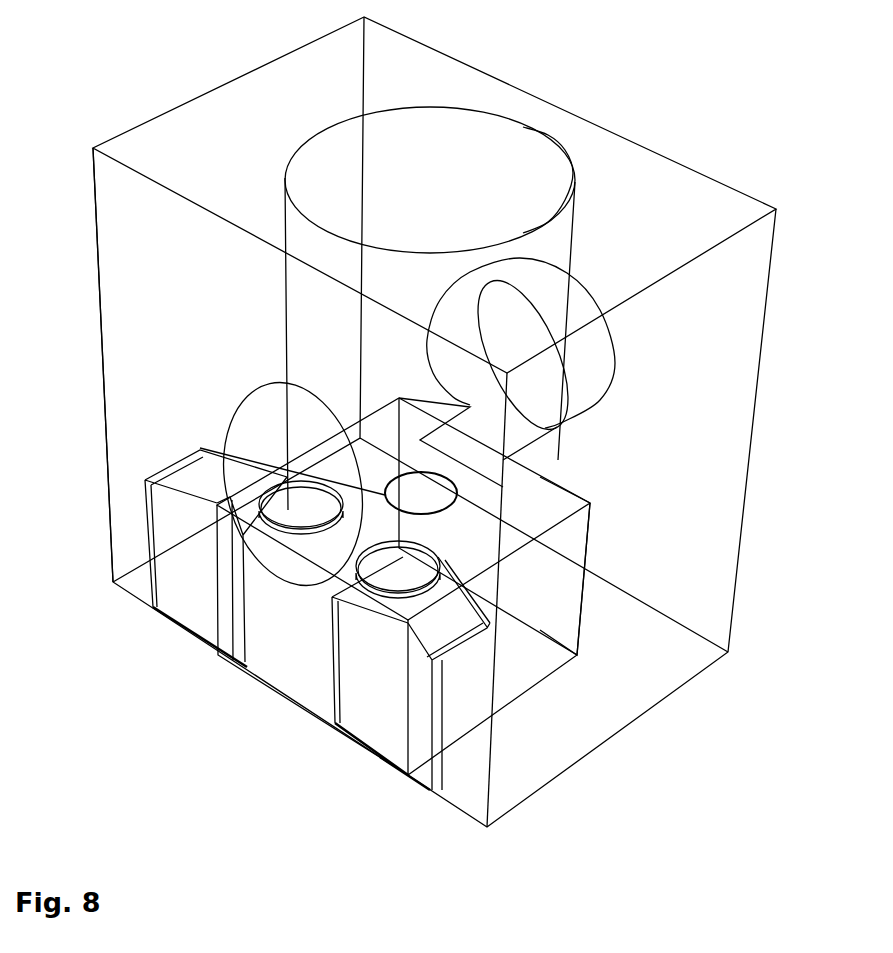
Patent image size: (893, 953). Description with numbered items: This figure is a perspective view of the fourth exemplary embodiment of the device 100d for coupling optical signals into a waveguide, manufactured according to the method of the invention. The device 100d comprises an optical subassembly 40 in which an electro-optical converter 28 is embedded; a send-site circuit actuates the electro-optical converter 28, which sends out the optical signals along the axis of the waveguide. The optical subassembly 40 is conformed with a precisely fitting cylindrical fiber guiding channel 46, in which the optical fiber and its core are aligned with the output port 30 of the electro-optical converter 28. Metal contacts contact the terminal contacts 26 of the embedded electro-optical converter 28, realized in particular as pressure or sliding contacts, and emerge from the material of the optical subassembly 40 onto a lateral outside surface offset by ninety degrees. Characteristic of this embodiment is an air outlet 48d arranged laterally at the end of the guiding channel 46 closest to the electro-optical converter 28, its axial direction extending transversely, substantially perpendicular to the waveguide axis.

The device for coupling optical signals into a waveguide 100d is at (115, 32).
The cylindrical fiber guiding channel 46 is at (435, 222).
The optical subassembly 40 is at (210, 353).
The air outlet 48d is at (230, 423).
The output port 30 is at (440, 493).
The electro-optical converter 28 is at (550, 623).
The terminal contacts 26 is at (378, 666).